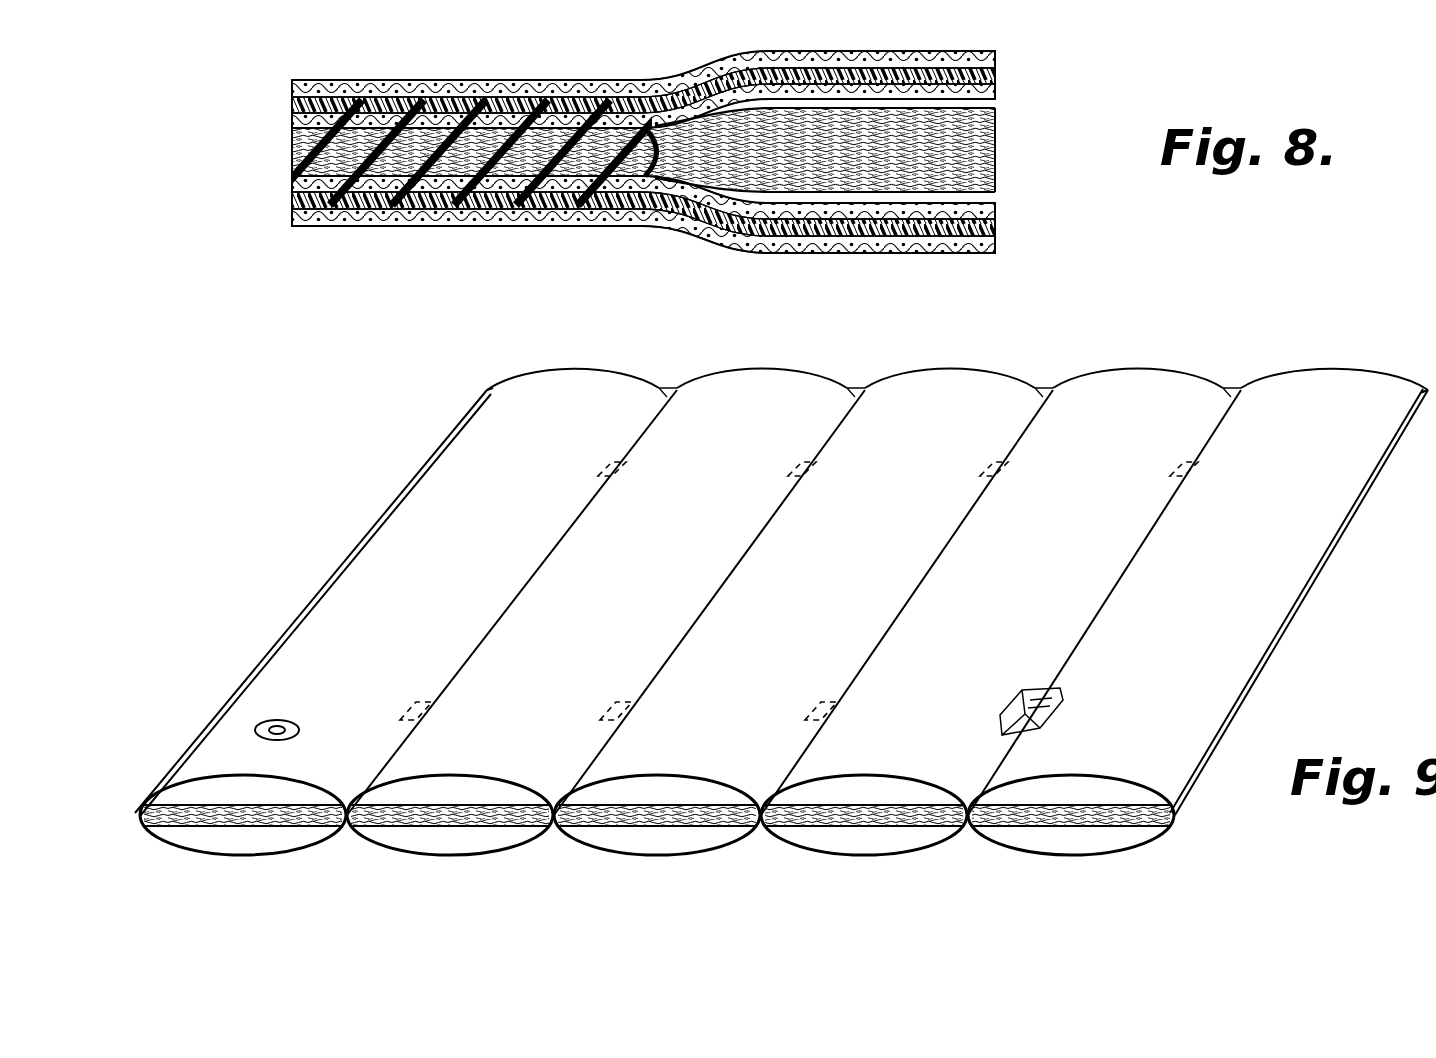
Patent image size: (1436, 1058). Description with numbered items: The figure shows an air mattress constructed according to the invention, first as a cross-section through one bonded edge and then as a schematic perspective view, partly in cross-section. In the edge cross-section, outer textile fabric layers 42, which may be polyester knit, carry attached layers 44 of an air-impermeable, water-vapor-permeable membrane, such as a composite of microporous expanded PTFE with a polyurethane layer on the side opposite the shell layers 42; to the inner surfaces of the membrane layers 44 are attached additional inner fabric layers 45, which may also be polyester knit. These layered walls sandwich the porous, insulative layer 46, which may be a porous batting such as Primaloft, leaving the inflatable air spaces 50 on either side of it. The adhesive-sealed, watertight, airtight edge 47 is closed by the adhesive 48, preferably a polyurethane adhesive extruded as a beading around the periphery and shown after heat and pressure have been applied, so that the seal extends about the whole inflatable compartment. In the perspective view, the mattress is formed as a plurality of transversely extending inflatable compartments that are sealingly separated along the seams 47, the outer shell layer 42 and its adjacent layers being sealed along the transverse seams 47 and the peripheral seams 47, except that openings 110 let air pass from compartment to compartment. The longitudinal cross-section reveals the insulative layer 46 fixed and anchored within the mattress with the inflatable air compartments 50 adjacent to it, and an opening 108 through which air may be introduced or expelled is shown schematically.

In FIG. 8, the outer textile fabric layer 42 is at (948, 54).
In FIG. 9, the outer textile fabric layer 42 is at (1300, 452).
In FIG. 8, the air-impermeable, water-vapor-permeable membrane layer 44 is at (988, 74).
In FIG. 8, the inner fabric layer 45 is at (998, 92).
In FIG. 8, the porous insulative layer 46 is at (1000, 158).
In FIG. 9, the porous insulative layer 46 is at (668, 822).
In FIG. 8, the sealed edge / seam 47 is at (478, 68).
In FIG. 9, the sealed edge / seam 47 is at (857, 386).
In FIG. 8, the adhesive beading 48 is at (292, 162).
In FIG. 8, the inflatable air space 50 is at (985, 108).
In FIG. 9, the inflatable air space 50 is at (263, 792).
In FIG. 9, the opening 108 is at (300, 722).
In FIG. 9, the opening 110 is at (795, 470).